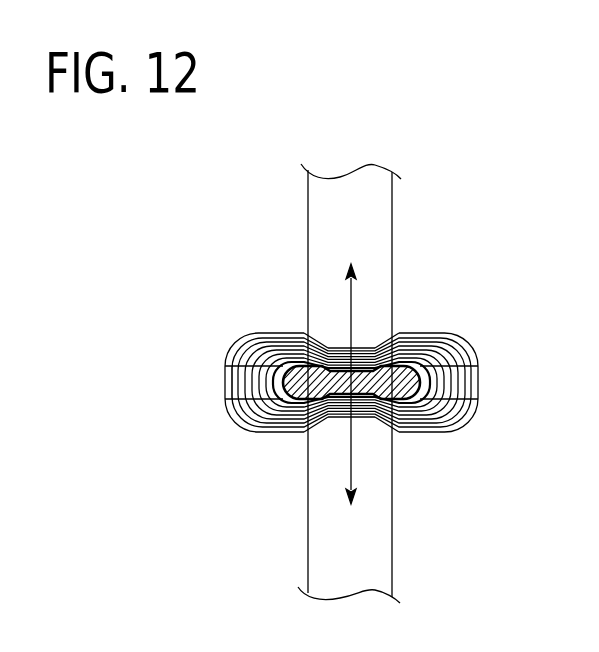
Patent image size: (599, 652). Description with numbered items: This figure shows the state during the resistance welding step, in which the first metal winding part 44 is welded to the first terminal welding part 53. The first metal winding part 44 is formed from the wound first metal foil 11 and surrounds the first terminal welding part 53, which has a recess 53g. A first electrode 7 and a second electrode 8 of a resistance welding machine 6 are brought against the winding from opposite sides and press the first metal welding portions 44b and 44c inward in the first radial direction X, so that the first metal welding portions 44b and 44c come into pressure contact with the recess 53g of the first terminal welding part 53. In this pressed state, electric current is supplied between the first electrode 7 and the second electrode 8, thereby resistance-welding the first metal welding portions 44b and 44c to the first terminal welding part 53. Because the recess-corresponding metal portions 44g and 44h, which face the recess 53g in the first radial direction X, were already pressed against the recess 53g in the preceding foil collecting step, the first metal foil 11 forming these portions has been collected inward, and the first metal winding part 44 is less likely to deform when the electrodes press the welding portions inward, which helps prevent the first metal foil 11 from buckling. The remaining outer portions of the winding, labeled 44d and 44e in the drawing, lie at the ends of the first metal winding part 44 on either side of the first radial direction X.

The resistance welding machine 6 is at (304, 226).
The first electrode 7 is at (382, 203).
The second electrode 8 is at (380, 548).
The first metal foil 11 is at (243, 432).
The first metal winding part 44 is at (258, 333).
The first metal welding portion 44b is at (367, 418).
The first metal welding portion 44c is at (372, 334).
The coil left end portion 44d is at (240, 389).
The coil right end portion 44e is at (480, 392).
The recess-corresponding metal portion 44g is at (302, 333).
The recess-corresponding metal portion 44h is at (331, 418).
The first terminal welding part 53 is at (305, 388).
The recess 53g is at (392, 333).
The first radial direction X is at (351, 300).